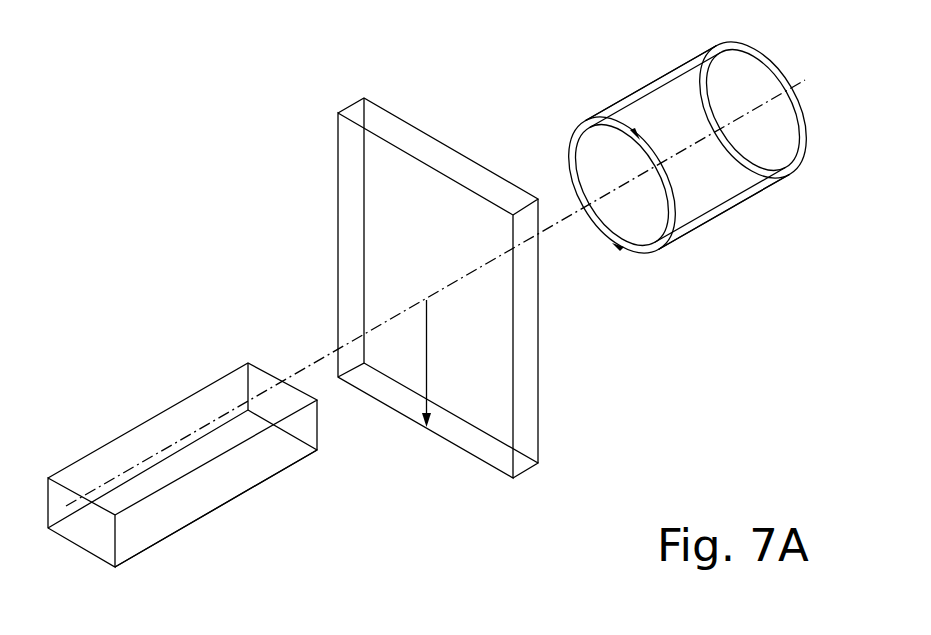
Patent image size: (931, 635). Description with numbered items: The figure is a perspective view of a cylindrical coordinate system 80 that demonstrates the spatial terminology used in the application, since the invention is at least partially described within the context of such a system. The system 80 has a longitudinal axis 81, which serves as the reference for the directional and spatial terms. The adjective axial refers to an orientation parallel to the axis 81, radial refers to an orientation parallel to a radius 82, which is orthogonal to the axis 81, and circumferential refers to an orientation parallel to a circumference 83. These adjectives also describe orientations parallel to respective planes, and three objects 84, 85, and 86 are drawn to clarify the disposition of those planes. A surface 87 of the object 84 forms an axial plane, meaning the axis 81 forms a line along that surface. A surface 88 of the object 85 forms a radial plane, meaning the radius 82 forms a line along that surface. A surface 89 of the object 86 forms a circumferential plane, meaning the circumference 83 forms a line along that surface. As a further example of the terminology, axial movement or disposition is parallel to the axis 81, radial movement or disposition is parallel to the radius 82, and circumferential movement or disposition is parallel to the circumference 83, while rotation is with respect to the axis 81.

The cylindrical coordinate system 80 is at (288, 157).
The longitudinal axis 81 is at (790, 62).
The radius 82 is at (427, 355).
The circumference 83 is at (576, 150).
The object 84 is at (143, 548).
The object 85 is at (553, 474).
The object 86 is at (725, 228).
The surface 87 is at (137, 443).
The surface 88 is at (353, 243).
The surface 89 is at (652, 80).